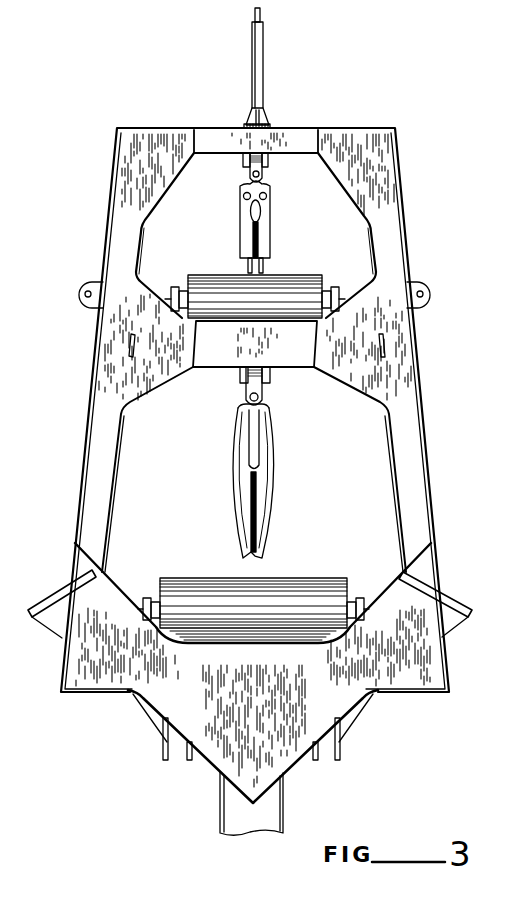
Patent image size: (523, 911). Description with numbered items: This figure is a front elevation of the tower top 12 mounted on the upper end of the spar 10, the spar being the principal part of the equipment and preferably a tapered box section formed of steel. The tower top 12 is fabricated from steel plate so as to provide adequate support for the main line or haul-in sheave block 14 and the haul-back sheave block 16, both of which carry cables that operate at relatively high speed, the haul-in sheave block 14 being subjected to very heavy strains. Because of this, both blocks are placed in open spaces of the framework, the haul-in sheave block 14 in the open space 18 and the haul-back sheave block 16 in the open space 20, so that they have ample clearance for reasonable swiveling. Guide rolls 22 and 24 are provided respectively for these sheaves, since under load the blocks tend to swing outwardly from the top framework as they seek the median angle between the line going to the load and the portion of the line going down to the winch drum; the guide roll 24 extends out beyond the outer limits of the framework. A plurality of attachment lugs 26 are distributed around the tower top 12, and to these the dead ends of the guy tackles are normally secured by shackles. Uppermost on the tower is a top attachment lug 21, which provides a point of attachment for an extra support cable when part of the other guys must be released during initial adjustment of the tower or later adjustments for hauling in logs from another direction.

The spar 10 is at (232, 805).
The tower top 12 is at (100, 435).
The main line or haul-in sheave block 14 is at (275, 440).
The haul-back sheave block 16 is at (264, 226).
The open space 18 is at (180, 492).
The open space 20 is at (204, 239).
The top attachment lug 21 is at (262, 12).
The guide roll 22 is at (305, 603).
The guide roll 24 is at (294, 293).
The attachment lugs 26 is at (420, 286).